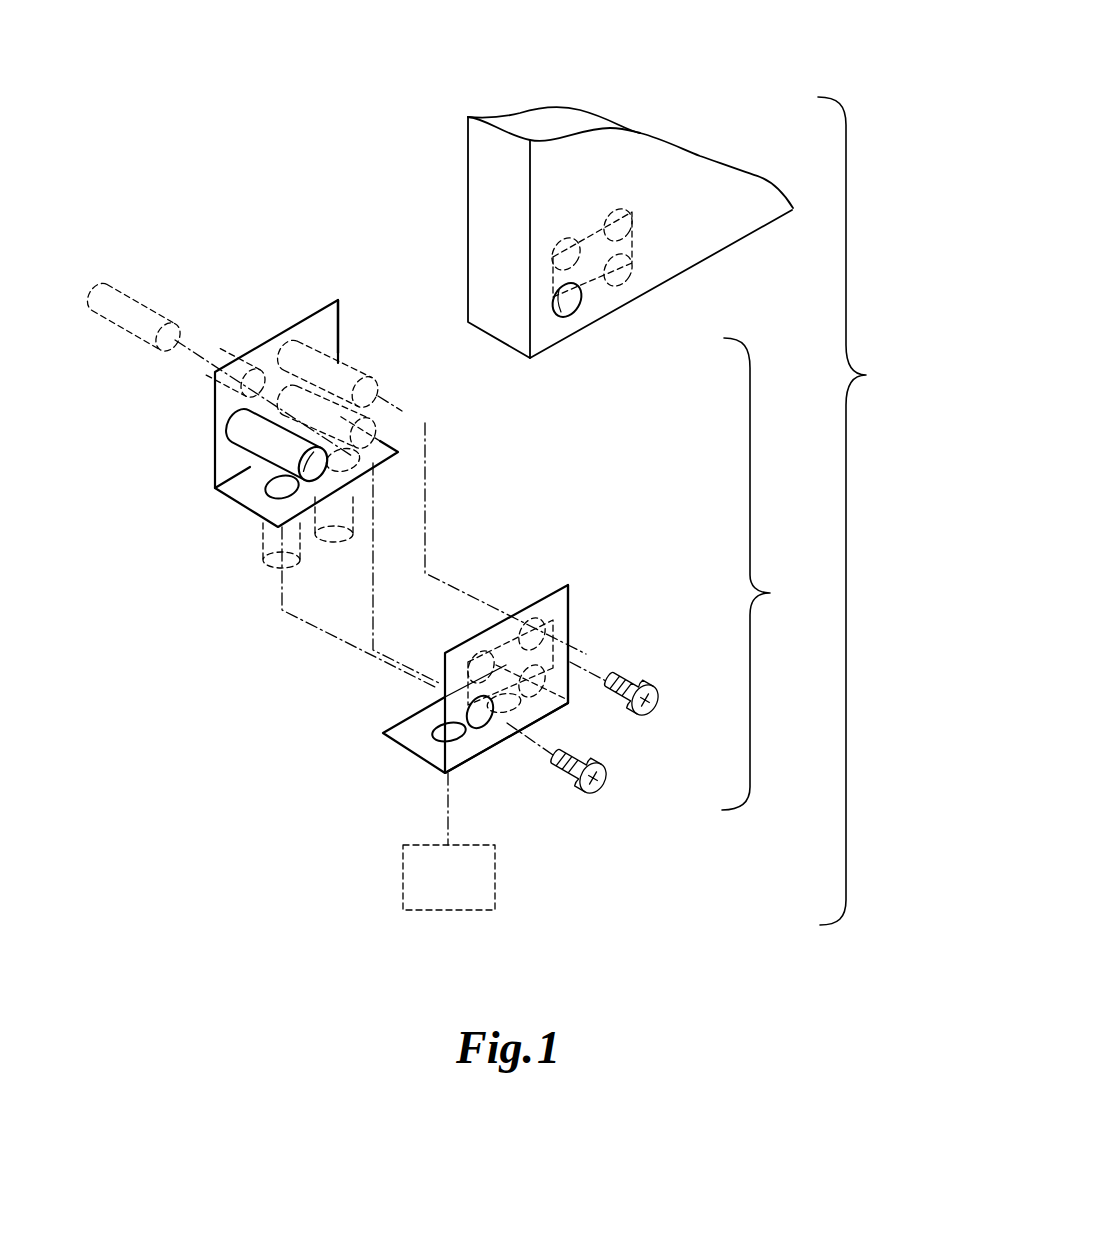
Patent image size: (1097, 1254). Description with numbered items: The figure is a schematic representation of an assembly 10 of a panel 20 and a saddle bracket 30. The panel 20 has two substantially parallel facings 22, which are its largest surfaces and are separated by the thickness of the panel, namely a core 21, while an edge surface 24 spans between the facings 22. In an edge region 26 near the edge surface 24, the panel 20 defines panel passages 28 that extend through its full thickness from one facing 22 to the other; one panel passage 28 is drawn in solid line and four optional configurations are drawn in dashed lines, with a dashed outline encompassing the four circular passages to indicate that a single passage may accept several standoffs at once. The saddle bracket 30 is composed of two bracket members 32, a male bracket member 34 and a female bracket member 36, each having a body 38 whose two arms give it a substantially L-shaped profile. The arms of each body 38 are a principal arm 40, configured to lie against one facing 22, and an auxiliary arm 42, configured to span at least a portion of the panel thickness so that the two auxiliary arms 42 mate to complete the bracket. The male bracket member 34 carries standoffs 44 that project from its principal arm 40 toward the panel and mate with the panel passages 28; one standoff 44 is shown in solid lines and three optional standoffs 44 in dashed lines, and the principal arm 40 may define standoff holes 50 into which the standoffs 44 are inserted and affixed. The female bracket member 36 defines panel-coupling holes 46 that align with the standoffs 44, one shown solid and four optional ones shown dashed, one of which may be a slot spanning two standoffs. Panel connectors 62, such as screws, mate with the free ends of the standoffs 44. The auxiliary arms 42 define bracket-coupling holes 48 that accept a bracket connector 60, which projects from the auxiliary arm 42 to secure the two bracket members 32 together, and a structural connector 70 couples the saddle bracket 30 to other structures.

The assembly 10 is at (866, 375).
The panel 20 is at (596, 255).
The core 21 is at (500, 213).
The facing 22 is at (468, 192).
The edge surface 24 is at (495, 278).
The edge region 26 is at (696, 231).
The panel passage 28 is at (592, 222).
The saddle bracket 30 is at (770, 593).
The bracket member 32 is at (354, 544).
The male bracket member 34 is at (308, 316).
The female bracket member 36 is at (556, 588).
The body 38 is at (340, 327).
The principal arm 40 is at (338, 300).
The auxiliary arm 42 is at (415, 408).
The standoff 44 is at (138, 288).
The panel-coupling hole 46 is at (528, 616).
The bracket-coupling hole 48 is at (265, 486).
The standoff hole 50 is at (248, 366).
The bracket connector 60 is at (262, 541).
The panel connector 62 is at (648, 682).
The structural connector 70 is at (403, 898).